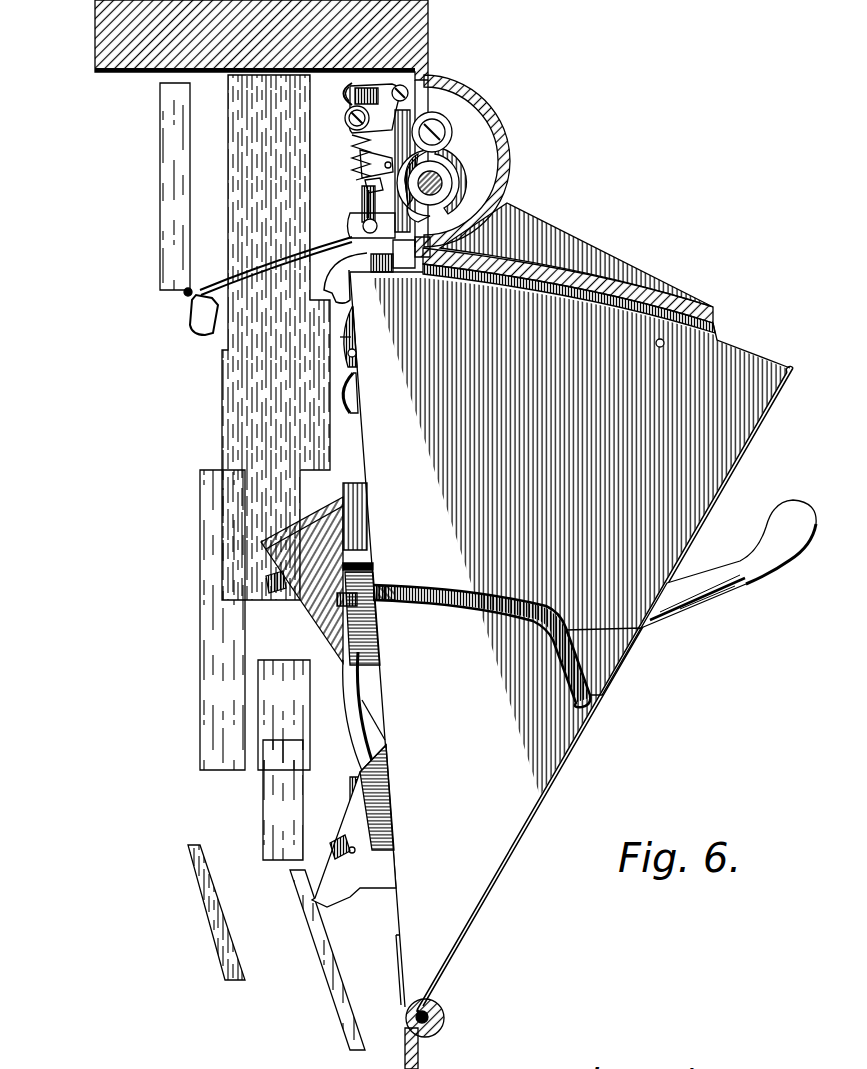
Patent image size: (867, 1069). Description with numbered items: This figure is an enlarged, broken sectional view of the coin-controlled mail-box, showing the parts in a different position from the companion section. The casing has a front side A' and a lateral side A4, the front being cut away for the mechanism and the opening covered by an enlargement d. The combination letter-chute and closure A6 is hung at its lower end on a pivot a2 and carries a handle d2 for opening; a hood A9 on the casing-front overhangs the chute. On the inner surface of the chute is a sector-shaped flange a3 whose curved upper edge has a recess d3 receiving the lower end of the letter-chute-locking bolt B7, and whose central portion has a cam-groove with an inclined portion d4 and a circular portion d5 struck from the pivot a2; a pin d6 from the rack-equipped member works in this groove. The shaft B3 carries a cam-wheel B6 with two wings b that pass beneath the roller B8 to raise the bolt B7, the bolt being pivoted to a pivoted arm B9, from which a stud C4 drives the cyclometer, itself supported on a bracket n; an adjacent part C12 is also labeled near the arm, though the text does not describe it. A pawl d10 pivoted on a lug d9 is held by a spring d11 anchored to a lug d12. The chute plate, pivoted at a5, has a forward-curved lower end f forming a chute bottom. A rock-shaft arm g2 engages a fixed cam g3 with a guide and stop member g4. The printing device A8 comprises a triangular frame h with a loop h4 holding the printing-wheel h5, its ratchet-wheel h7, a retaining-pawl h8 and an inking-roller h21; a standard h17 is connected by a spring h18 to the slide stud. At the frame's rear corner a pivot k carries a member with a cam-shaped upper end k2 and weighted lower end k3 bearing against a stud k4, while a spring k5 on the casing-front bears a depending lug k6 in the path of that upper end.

The front side A' is at (288, 534).
The lateral side A4 is at (262, 562).
The combination letter-chute and closure A6 is at (547, 773).
The printing or numbering device A8 is at (340, 737).
The hood A9 is at (607, 267).
The pivot a2 is at (443, 1007).
The sector-shaped flange a3 is at (569, 605).
The pivots a5 is at (656, 347).
The wings or arms b is at (462, 150).
The shaft B3 is at (452, 183).
The cam-wheel B6 is at (478, 162).
The letter-chute-locking bolt B7 is at (356, 163).
The roller B8 is at (448, 120).
The pivoted arm B9 is at (344, 118).
The stud C4 is at (398, 85).
The latch piece C12 is at (367, 177).
The enlargement d is at (505, 205).
The handle d2 is at (740, 588).
The recess d3 is at (740, 348).
The upwardly and rearwardly extending portion of cam-groove d4 is at (580, 612).
The circular portion of cam-groove d5 is at (480, 587).
The pin d6 is at (387, 587).
The lug d9 is at (350, 227).
The pawl d10 is at (383, 280).
The spring d11 is at (343, 143).
The lug d12 is at (343, 90).
The curved lower end f is at (397, 967).
The actuating-arm g2 is at (263, 540).
The fixed cam g3 is at (350, 513).
The guide and stop member g4 is at (267, 582).
The triangular frame member h is at (340, 337).
The loop h4 is at (357, 873).
The printing-wheel h5 is at (350, 795).
The ratchet-wheel h7 is at (373, 782).
The retaining-pawl h8 is at (343, 682).
The standard h17 is at (340, 600).
The spring h18 is at (347, 597).
The inking-roller h21 is at (332, 847).
The pivot k is at (350, 328).
The cam-shaped upper end k2 is at (327, 285).
The weighted lower end k3 is at (347, 393).
The stud k4 is at (355, 354).
The spring k5 is at (253, 265).
The depending lug k6 is at (197, 313).
The bracket n is at (360, 207).